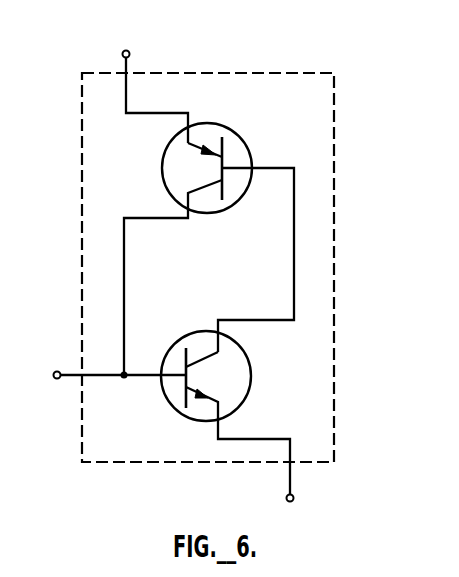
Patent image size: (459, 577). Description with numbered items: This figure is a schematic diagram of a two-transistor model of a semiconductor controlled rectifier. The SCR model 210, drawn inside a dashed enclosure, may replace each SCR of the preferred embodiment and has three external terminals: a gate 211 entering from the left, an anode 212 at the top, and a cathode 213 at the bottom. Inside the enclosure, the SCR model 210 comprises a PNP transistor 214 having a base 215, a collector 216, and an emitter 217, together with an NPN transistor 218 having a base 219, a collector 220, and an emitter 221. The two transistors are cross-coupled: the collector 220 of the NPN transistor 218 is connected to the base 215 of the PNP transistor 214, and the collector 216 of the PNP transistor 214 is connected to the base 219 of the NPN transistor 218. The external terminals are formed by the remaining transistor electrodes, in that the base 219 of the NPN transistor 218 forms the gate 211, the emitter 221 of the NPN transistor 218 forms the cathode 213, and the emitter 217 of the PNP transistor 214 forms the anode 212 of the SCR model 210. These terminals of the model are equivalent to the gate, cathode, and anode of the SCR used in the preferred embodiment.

The two-transistor SCR model 210 is at (345, 97).
The gate 211 is at (56, 371).
The anode 212 is at (129, 52).
The cathode 213 is at (294, 498).
The PNP transistor 214 is at (242, 136).
The base 215 is at (267, 167).
The collector 216 is at (205, 191).
The emitter 217 is at (205, 148).
The NPN transistor 218 is at (251, 365).
The base 219 is at (170, 372).
The collector 220 is at (203, 333).
The emitter 221 is at (207, 405).